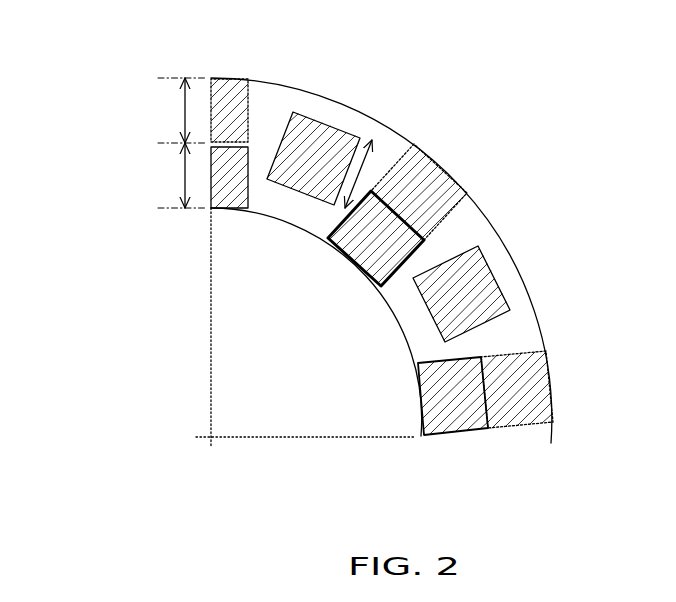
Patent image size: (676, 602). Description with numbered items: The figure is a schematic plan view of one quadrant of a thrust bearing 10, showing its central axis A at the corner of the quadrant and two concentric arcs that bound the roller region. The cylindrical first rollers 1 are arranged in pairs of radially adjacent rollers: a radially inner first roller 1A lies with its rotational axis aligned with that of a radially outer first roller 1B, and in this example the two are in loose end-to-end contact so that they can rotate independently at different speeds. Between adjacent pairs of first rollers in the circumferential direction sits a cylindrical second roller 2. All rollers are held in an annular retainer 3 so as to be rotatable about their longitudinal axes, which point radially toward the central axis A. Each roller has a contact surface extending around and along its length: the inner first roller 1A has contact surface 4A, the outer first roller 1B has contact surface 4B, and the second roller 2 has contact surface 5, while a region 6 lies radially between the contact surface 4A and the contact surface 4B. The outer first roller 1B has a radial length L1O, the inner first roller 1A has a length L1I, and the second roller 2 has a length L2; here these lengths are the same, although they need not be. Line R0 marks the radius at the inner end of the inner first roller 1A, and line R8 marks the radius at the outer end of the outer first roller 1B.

The first rollers 1 is at (381, 225).
The inner first roller 1A is at (347, 242).
The outer first roller 1B is at (438, 180).
The second rollers 2 is at (328, 140).
The annular retainer 3 is at (522, 337).
The contact surface 4A is at (368, 252).
The contact surface 4B is at (418, 172).
The contact surface 5 is at (470, 280).
The region 6 is at (400, 200).
The thrust bearing 10 is at (374, 258).
The line R8 is at (275, 84).
The line R0 is at (390, 307).
The length of second roller L2 is at (362, 167).
The length of outer first roller L1O is at (160, 110).
The length of inner first roller L1I is at (161, 175).
The central axis A is at (206, 443).